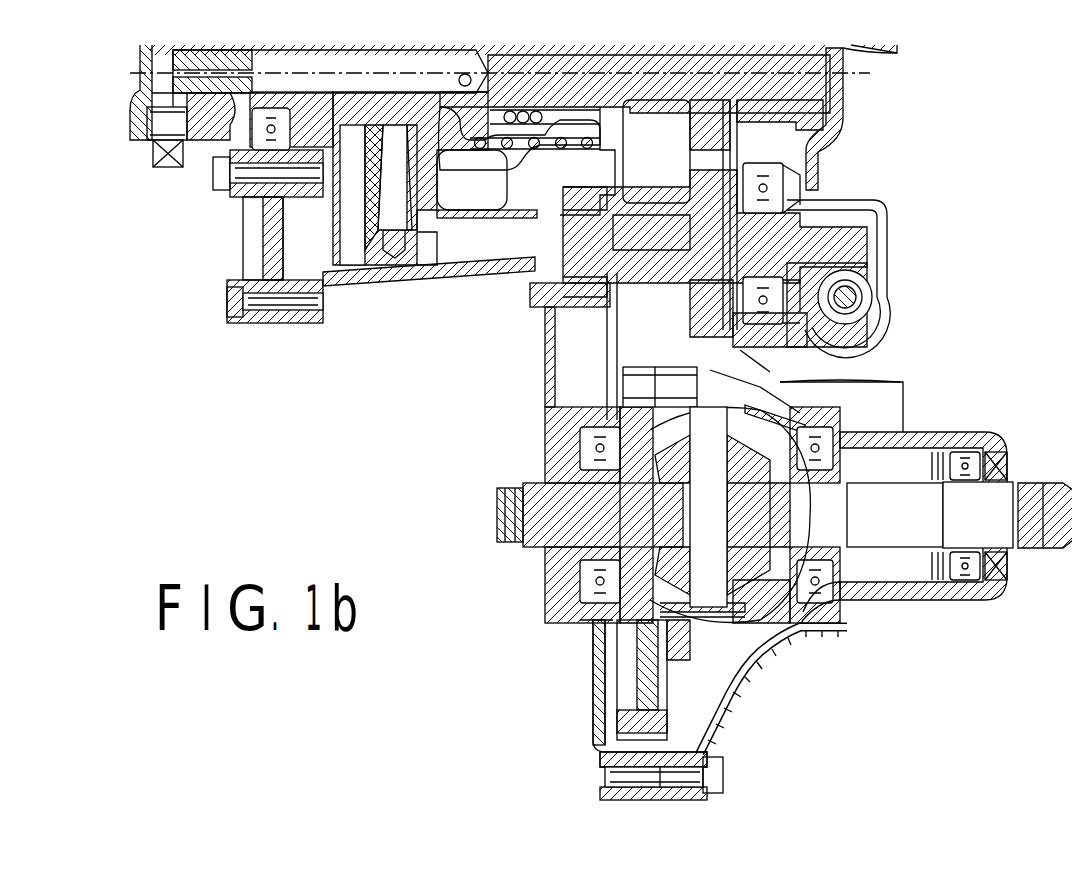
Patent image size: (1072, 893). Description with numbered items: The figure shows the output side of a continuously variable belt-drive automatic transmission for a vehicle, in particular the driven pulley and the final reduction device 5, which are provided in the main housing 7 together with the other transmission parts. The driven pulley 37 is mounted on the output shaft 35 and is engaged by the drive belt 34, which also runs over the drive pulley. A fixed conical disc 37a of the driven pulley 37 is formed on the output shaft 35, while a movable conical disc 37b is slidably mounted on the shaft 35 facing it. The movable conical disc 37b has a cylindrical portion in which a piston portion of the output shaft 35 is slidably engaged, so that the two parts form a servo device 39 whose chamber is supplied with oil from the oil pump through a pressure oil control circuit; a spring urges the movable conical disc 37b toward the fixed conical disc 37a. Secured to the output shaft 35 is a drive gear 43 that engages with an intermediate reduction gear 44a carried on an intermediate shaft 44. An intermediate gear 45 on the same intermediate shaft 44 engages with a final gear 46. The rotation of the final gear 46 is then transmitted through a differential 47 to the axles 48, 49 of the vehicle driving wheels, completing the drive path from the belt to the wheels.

The final reduction device 5 is at (715, 655).
The main housing 7 is at (461, 282).
The drive belt 34 is at (397, 262).
The output shaft 35 is at (818, 92).
The driven pulley 37 is at (347, 268).
The fixed conical disc 37a is at (350, 193).
The movable conical disc 37b is at (427, 232).
The servo device 39 is at (520, 187).
The drive gear 43 is at (697, 123).
The intermediate shaft 44 is at (867, 228).
The intermediate reduction gear 44a is at (743, 347).
The intermediate gear 45 is at (650, 195).
The final gear 46 is at (623, 688).
The differential 47 is at (770, 607).
The axle 48 is at (507, 540).
The axle 49 is at (1033, 490).